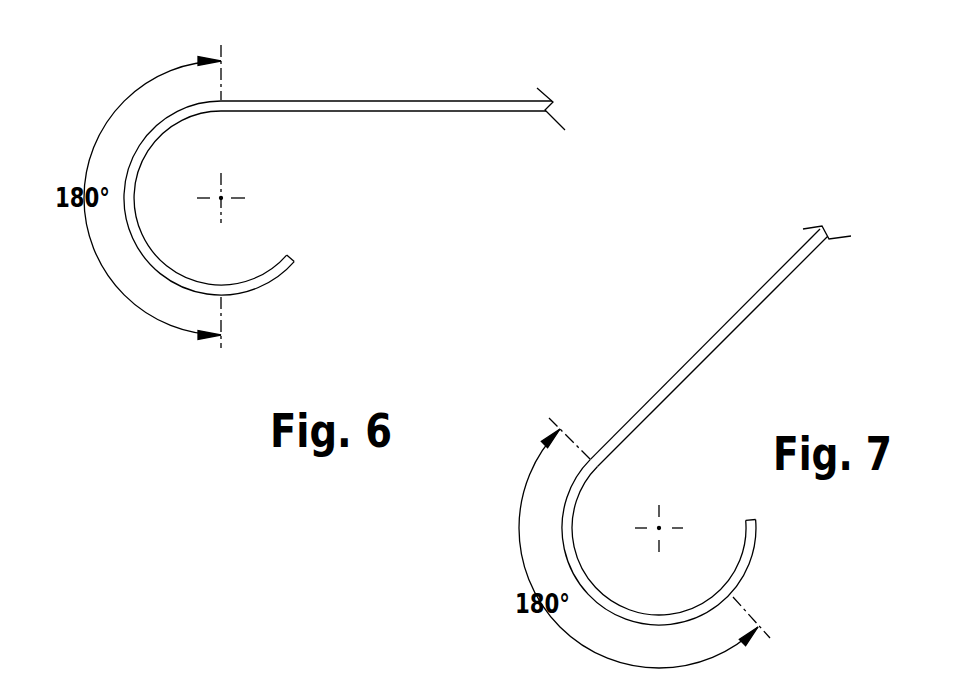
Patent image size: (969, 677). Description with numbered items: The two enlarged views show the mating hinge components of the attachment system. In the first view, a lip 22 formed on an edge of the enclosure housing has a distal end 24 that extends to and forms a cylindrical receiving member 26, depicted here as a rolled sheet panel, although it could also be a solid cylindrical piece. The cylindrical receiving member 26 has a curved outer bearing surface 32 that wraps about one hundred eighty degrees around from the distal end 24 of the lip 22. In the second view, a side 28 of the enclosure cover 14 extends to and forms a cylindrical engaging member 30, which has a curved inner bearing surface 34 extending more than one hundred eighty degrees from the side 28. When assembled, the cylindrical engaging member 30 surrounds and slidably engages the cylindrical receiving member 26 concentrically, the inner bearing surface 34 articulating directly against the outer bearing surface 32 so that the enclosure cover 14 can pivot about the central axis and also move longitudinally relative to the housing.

In FIG. 7, the enclosure cover 14 is at (724, 323).
In FIG. 6, the lip 22 is at (277, 101).
In FIG. 6, the distal end 24 is at (205, 112).
In FIG. 6, the cylindrical receiving member 26 is at (283, 273).
In FIG. 7, the side 28 is at (596, 452).
In FIG. 7, the cylindrical engaging member 30 is at (750, 557).
In FIG. 6, the outer bearing surface 32 is at (262, 288).
In FIG. 7, the inner bearing surface 34 is at (673, 613).